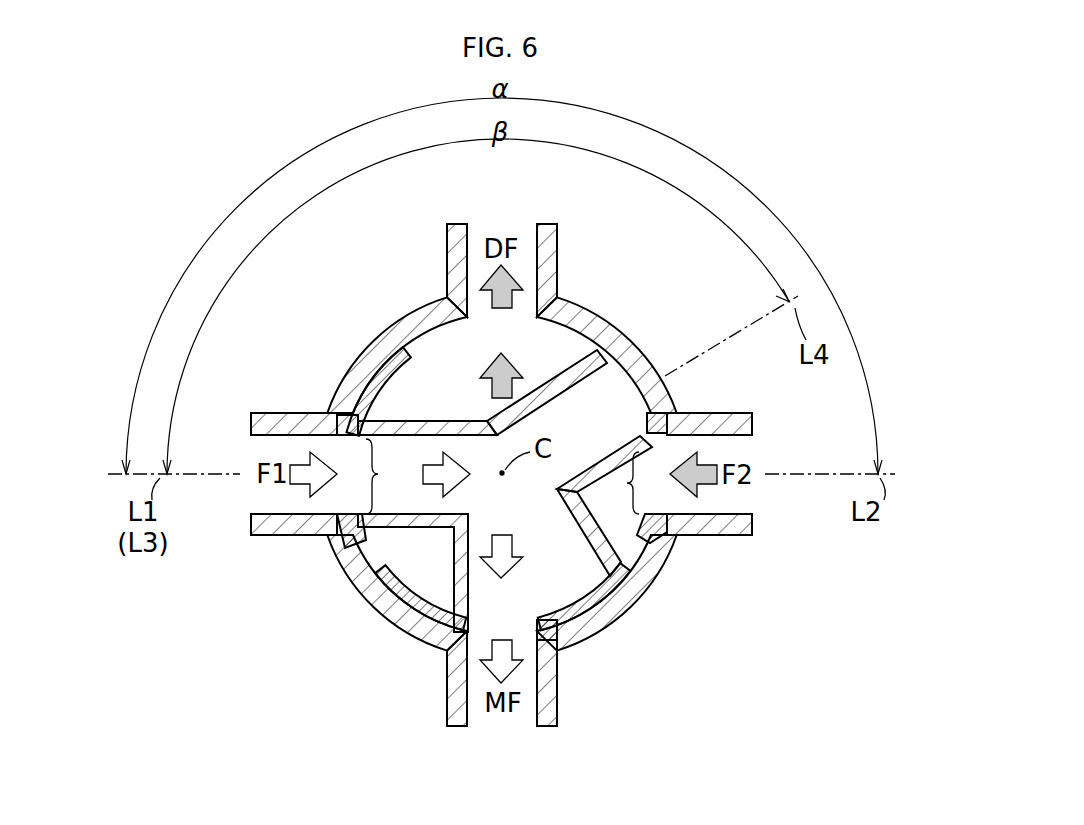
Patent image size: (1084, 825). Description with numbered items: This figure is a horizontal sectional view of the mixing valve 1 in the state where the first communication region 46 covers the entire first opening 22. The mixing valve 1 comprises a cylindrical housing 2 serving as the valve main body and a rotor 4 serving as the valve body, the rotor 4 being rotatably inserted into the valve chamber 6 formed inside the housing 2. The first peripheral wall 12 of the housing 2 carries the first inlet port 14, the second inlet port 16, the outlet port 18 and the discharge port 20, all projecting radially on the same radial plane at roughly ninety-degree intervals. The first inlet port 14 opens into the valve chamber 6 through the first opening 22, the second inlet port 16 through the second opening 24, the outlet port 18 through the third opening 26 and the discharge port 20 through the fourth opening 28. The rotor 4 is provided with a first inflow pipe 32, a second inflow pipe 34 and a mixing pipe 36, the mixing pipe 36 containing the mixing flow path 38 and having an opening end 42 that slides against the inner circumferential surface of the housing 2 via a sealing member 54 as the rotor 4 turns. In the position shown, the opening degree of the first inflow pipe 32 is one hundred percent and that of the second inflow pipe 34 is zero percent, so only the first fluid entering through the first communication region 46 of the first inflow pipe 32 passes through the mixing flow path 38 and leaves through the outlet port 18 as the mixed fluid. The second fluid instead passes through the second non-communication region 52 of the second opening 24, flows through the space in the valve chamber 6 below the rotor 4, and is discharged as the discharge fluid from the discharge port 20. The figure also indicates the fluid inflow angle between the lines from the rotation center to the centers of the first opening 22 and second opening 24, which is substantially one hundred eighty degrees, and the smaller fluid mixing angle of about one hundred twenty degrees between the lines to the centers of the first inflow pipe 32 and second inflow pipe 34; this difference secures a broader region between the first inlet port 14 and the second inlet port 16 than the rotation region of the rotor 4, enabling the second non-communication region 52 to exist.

The mixing valve 1 is at (791, 203).
The housing 2 is at (597, 311).
The rotor 4 is at (407, 412).
The valve chamber 6 is at (493, 348).
The first peripheral wall 12 is at (387, 627).
The first inlet port 14 is at (271, 412).
The second inlet port 16 is at (722, 412).
The outlet port 18 is at (447, 687).
The discharge port 20 is at (562, 258).
The first opening 22 is at (337, 497).
The second opening 24 is at (667, 495).
The third opening 26 is at (552, 653).
The fourth opening 28 is at (478, 308).
The first inflow pipe 32 is at (440, 418).
The second inflow pipe 34 is at (547, 387).
The mixing pipe 36 is at (652, 580).
The mixing flow path 38 is at (640, 540).
The opening end 42 is at (630, 600).
The first communication region 46 is at (388, 476).
The second non-communication region 52 is at (618, 483).
The sealing member 54 is at (365, 367).